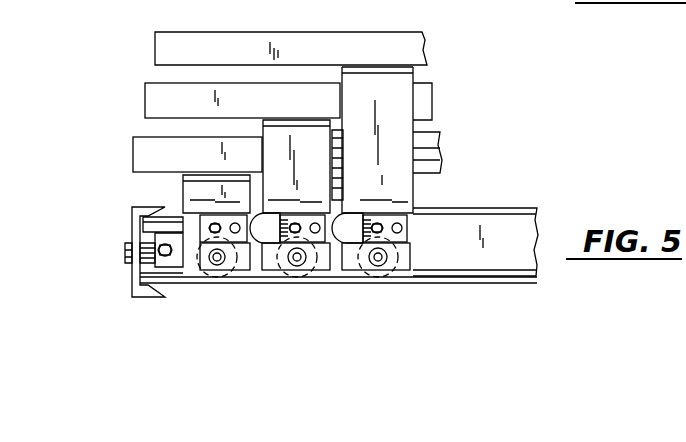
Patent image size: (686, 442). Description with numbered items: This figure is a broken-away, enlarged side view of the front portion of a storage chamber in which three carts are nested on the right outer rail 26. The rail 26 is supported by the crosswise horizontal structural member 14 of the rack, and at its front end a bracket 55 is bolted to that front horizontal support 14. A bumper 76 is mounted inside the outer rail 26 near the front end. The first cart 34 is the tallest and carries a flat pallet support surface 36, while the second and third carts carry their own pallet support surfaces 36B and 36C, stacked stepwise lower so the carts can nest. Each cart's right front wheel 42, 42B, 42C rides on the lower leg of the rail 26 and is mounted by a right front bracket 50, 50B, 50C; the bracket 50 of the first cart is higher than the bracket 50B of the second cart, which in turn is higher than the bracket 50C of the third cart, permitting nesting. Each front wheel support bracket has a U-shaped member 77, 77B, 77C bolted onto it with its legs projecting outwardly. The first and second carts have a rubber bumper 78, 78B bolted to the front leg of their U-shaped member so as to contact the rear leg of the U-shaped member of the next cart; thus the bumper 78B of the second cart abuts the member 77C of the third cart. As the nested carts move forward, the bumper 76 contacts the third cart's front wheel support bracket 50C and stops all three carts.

The crosswise horizontal structural member 14 is at (131, 211).
The right outer rail 26 is at (513, 208).
The first cart 34 is at (395, 33).
The pallet support surface 36 is at (281, 14).
The pallet support surface of second cart 36B is at (146, 83).
The pallet support surface of third cart 36C is at (146, 137).
The right front wheel 42 is at (407, 280).
The right front wheel of second cart 42B is at (338, 270).
The right front wheel of third cart 42C is at (212, 275).
The right front bracket 50 is at (415, 131).
The right front bracket of second cart 50B is at (437, 145).
The right front bracket of third cart 50C is at (183, 186).
The bracket 55 is at (132, 284).
The bumper 76 is at (127, 234).
The U-shaped member 77 is at (405, 204).
The U-shaped member of second cart 77B is at (343, 280).
The U-shaped member of third cart 77C is at (213, 258).
The rubber bumper 78 is at (350, 213).
The rubber bumper of second cart 78B is at (258, 245).